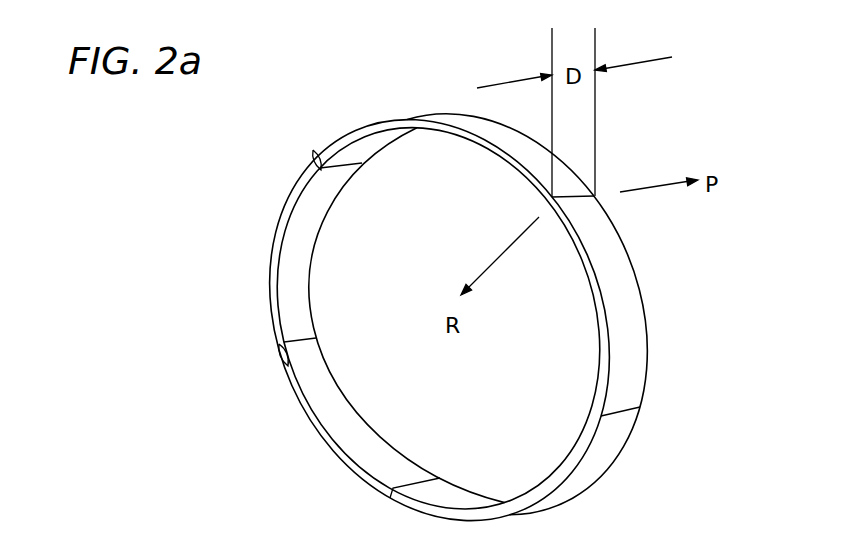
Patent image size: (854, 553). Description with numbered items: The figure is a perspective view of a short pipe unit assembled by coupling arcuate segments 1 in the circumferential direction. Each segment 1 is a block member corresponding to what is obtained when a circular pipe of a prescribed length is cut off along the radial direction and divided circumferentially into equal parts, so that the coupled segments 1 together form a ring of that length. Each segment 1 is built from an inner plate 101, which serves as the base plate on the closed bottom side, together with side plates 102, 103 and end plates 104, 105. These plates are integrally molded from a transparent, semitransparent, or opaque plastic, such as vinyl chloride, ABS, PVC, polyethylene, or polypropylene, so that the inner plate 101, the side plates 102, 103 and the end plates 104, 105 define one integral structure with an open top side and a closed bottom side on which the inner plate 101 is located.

The segment 1 is at (247, 282).
The inner plate 101 is at (300, 271).
The side plate 102 is at (274, 321).
The side plate 103 is at (327, 207).
The end plate 104 is at (290, 343).
The end plate 105 is at (313, 157).